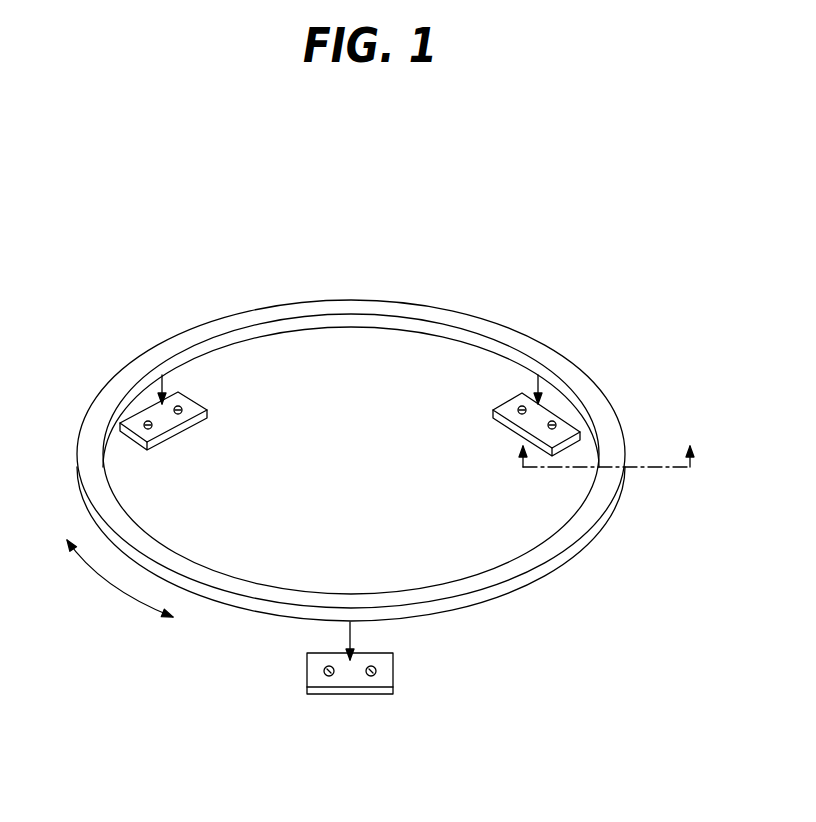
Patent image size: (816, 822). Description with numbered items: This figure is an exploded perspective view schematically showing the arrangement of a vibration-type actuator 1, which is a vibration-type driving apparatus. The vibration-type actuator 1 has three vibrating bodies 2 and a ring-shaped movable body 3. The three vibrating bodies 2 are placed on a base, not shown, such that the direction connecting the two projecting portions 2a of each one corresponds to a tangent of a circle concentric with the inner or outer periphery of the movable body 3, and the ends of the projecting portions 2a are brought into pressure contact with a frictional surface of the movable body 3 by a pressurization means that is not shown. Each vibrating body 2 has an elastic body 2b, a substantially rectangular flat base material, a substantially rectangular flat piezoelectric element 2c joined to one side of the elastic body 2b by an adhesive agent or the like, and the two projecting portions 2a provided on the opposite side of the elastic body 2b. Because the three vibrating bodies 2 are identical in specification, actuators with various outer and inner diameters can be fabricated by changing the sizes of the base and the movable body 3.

The vibration-type actuator 1 is at (208, 312).
The vibrating body 2 is at (350, 562).
The projecting portion 2a is at (372, 678).
The elastic body 2b is at (312, 670).
The piezoelectric element 2c is at (321, 692).
The movable body 3 is at (604, 535).